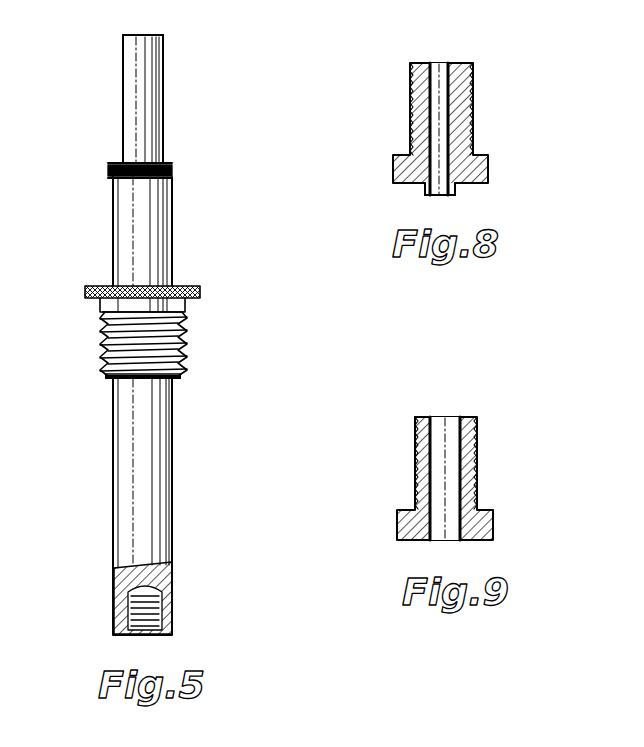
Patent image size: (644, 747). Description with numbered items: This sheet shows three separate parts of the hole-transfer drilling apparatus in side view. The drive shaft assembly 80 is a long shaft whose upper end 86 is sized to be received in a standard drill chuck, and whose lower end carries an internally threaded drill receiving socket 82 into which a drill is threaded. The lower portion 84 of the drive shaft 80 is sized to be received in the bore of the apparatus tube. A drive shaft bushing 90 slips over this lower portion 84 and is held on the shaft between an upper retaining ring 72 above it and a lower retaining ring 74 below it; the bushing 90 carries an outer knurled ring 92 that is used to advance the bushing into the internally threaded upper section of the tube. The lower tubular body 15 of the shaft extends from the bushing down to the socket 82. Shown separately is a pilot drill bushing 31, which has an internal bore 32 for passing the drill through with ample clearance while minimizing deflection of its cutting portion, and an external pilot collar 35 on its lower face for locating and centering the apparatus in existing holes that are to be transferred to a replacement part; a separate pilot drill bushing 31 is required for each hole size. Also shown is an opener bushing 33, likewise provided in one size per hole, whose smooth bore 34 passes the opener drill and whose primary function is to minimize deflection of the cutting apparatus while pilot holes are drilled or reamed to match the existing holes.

In FIG. 5, the drive shaft assembly 80 is at (174, 91).
In FIG. 5, the upper end 86 is at (131, 87).
In FIG. 5, the upper retaining ring 72 is at (172, 172).
In FIG. 5, the lower portion 84 is at (121, 220).
In FIG. 5, the outer knurled ring 92 is at (200, 296).
In FIG. 5, the drive shaft bushing 90 is at (101, 345).
In FIG. 5, the lower retaining ring 74 is at (105, 378).
In FIG. 5, the lower tube 15 is at (173, 499).
In FIG. 5, the internally threaded drill receiving socket 82 is at (173, 615).
In FIG. 8, the pilot drill bushing 31 is at (408, 84).
In FIG. 8, the internal bore 32 is at (440, 62).
In FIG. 8, the external pilot collar 35 is at (427, 190).
In FIG. 9, the opener bushing 33 is at (413, 450).
In FIG. 9, the smooth bore 34 is at (452, 416).